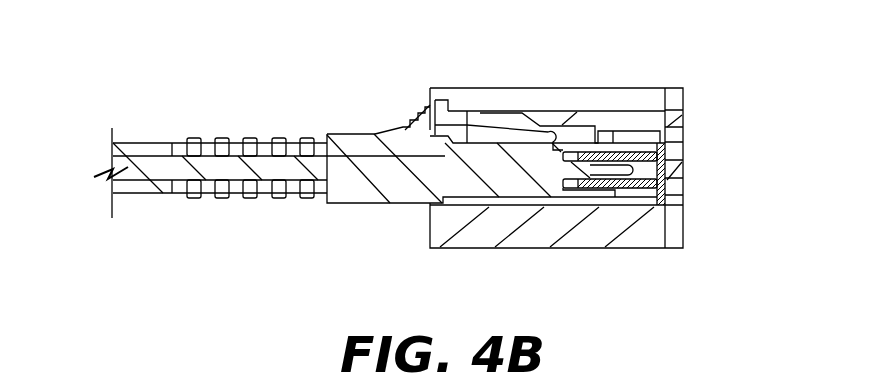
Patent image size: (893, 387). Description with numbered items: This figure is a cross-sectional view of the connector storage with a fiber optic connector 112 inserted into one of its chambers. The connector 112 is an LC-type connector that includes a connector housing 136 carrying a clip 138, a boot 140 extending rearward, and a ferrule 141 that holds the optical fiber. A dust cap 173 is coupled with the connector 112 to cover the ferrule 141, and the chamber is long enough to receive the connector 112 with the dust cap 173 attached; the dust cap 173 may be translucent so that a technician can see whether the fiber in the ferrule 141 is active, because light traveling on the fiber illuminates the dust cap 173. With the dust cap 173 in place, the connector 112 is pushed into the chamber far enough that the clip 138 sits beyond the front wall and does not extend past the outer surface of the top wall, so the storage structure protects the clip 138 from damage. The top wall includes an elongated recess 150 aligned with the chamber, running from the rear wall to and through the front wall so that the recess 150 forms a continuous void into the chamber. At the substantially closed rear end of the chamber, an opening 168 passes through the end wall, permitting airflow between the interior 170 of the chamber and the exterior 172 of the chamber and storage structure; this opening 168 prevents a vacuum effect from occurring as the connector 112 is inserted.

The fiber optic connector 112 is at (393, 100).
The connector housing 136 is at (477, 180).
The clip 138 is at (455, 118).
The boot 140 is at (161, 197).
The ferrule 141 is at (620, 128).
The elongated recess 150 is at (598, 110).
The opening 168 is at (684, 138).
The interior 170 is at (650, 126).
The exterior 172 is at (757, 248).
The dust cap 173 is at (643, 190).